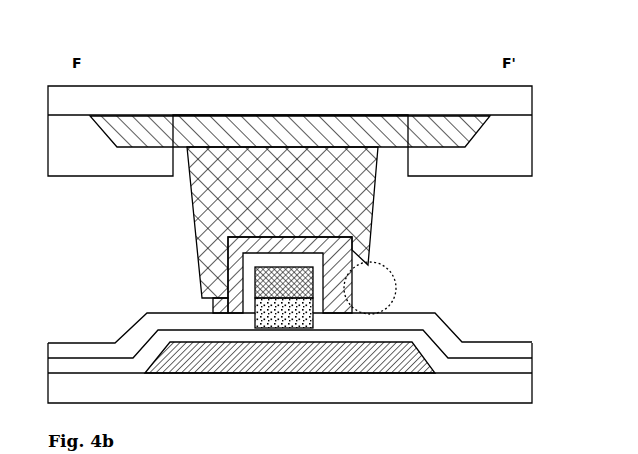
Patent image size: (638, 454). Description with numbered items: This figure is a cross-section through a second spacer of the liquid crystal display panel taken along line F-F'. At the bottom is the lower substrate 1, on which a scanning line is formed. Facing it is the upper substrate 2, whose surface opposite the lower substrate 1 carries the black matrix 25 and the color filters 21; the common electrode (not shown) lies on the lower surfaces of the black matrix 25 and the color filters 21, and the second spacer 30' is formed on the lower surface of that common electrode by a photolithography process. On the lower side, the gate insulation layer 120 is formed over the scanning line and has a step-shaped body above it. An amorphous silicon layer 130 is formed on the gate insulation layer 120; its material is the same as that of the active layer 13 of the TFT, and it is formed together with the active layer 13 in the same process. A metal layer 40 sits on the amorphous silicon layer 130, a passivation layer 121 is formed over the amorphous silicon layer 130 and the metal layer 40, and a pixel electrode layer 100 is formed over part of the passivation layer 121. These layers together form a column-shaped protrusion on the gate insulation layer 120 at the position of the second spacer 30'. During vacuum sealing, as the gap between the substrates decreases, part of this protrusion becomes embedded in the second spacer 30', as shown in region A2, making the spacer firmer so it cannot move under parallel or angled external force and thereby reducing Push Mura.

The lower substrate 1 is at (515, 390).
The upper substrate 2 is at (508, 101).
The active layer 13 is at (413, 348).
The color filters 21 is at (508, 153).
The black matrix 25 is at (462, 127).
The second spacer 30' is at (322, 222).
The metal layer 40 is at (342, 278).
The pixel electrode layer 100 is at (228, 278).
The gate insulation layer 120 is at (515, 366).
The passivation layer 121 is at (515, 348).
The amorphous silicon layer 130 is at (215, 300).
The region A2 is at (393, 267).